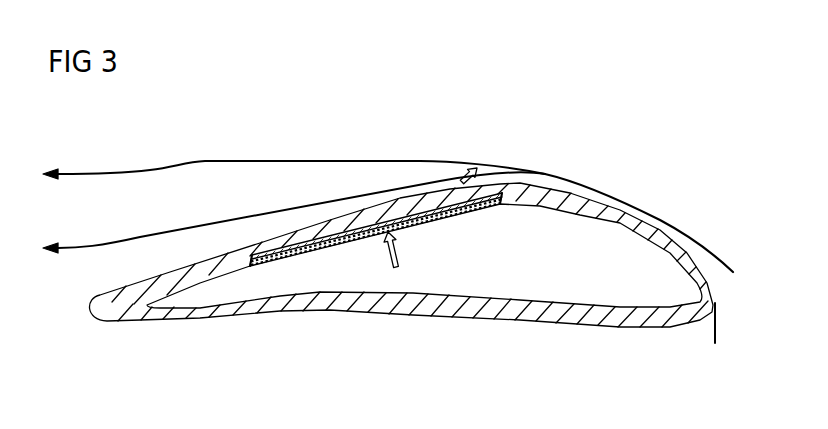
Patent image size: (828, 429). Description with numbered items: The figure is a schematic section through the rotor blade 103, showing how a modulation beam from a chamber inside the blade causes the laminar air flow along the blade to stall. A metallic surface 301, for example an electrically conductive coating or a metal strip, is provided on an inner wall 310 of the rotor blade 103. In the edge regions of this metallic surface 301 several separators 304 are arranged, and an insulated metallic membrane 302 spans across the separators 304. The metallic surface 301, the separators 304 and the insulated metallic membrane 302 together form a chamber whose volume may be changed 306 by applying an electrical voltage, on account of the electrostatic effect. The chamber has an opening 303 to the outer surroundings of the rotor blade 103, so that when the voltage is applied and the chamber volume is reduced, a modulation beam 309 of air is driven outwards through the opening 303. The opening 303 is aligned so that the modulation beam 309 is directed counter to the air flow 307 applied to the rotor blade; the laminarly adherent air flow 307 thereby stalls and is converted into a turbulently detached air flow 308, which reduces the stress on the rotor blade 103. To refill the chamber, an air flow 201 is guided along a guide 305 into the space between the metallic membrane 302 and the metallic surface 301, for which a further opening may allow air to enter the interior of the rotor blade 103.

The rotor blade 103 is at (288, 317).
The air flow 201 is at (717, 327).
The metallic surface 301 is at (397, 218).
The insulated metallic membrane 302 is at (460, 213).
The opening 303 is at (443, 202).
The separators 304 is at (282, 257).
The guide 305 is at (638, 225).
The volume change 306 is at (390, 266).
The air flow 307 is at (83, 246).
The turbulently detached air flow 308 is at (83, 172).
The modulation beam 309 is at (455, 166).
The inner wall 310 is at (558, 300).